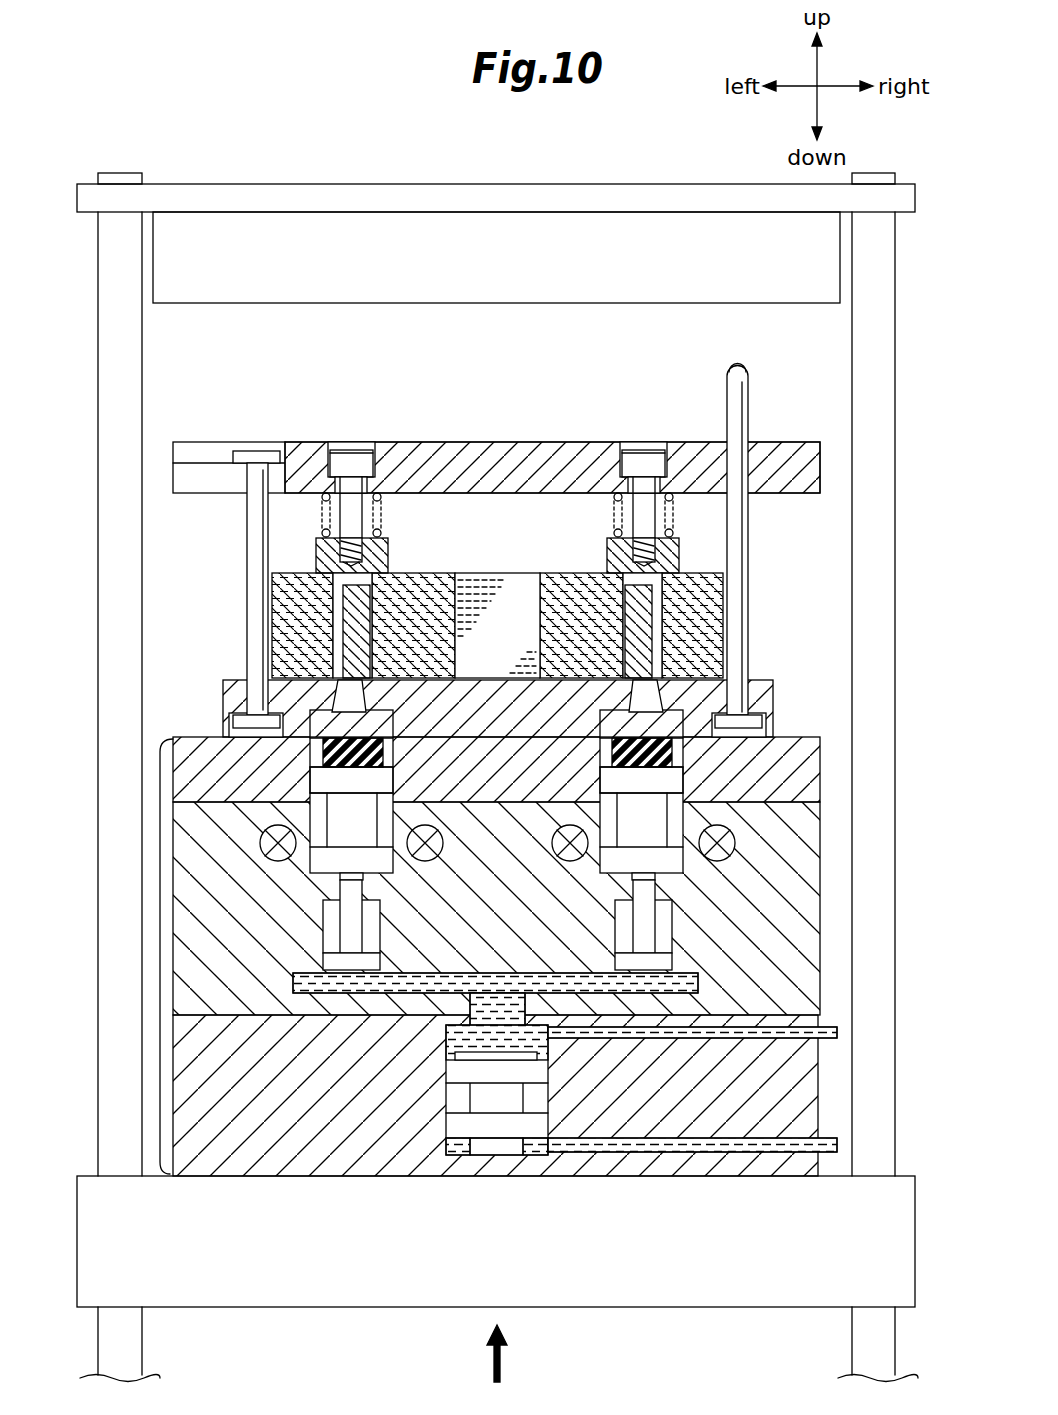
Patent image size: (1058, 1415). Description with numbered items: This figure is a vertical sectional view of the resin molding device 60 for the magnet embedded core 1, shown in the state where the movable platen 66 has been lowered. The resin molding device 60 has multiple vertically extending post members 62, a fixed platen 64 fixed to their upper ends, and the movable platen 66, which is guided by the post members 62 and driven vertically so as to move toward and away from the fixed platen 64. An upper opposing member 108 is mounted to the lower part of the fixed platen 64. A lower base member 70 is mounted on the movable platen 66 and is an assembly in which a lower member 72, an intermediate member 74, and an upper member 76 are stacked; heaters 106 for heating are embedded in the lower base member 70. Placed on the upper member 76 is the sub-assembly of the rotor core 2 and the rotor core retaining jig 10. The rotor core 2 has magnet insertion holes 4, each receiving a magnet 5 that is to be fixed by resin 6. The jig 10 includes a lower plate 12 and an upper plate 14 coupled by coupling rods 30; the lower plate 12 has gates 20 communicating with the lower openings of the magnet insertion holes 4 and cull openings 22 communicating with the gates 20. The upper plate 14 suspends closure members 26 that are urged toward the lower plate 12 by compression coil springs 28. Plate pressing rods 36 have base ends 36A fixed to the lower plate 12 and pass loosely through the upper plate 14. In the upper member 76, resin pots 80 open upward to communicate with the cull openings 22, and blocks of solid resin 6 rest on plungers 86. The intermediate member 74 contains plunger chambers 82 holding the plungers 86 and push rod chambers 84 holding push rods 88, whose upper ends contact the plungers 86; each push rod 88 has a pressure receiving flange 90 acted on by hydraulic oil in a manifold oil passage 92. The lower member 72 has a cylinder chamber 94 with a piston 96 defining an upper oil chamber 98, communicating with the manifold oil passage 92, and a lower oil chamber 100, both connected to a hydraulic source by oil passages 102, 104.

The magnet embedded core 1 is at (512, 570).
The rotor core 2 is at (434, 575).
The magnet insertion hole 4 is at (340, 610).
The magnet 5 is at (356, 618).
The resin 6 is at (374, 752).
The rotor core retaining jig 10 is at (765, 554).
The lower plate 12 is at (467, 697).
The upper plate 14 is at (499, 478).
The gate 20 is at (347, 692).
The cull opening 22 is at (332, 723).
The closure member 26 is at (318, 562).
The compression coil spring 28 is at (380, 490).
The coupling rod 30 is at (243, 521).
The plate pressing rod 36 is at (758, 522).
The base end 36A is at (738, 365).
The resin molding device 60 is at (905, 415).
The post member 62 is at (98, 541).
The fixed platen 64 is at (299, 200).
The movable platen 66 is at (608, 1290).
The lower base member 70 is at (501, 967).
The lower member 72 is at (805, 1108).
The intermediate member 74 is at (805, 880).
The upper member 76 is at (805, 772).
The resin pot 80 is at (498, 791).
The plunger chamber 82 is at (398, 824).
The push rod chamber 84 is at (383, 928).
The plunger 86 is at (322, 780).
The push rod 88 is at (350, 928).
The pressure receiving flange 90 is at (340, 963).
The manifold oil passage 92 is at (488, 973).
The cylinder chamber 94 is at (504, 1125).
The piston 96 is at (470, 1104).
The upper oil chamber 98 is at (525, 1043).
The lower oil chamber 100 is at (455, 1157).
The oil passage 102 is at (838, 1040).
The oil passage 104 is at (758, 1153).
The heater 106 is at (284, 862).
The upper opposing member 108 is at (692, 222).